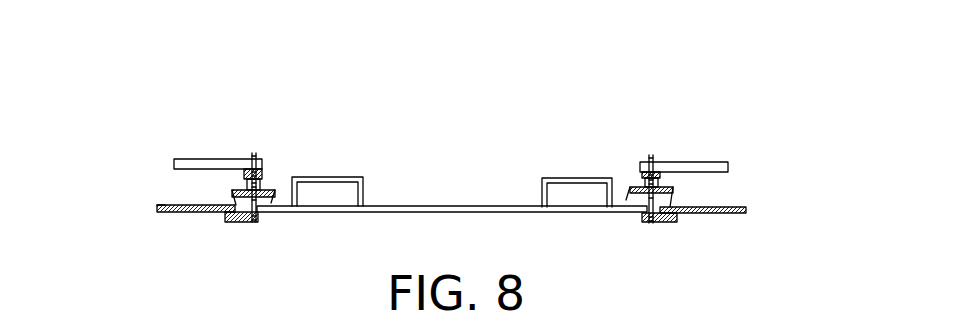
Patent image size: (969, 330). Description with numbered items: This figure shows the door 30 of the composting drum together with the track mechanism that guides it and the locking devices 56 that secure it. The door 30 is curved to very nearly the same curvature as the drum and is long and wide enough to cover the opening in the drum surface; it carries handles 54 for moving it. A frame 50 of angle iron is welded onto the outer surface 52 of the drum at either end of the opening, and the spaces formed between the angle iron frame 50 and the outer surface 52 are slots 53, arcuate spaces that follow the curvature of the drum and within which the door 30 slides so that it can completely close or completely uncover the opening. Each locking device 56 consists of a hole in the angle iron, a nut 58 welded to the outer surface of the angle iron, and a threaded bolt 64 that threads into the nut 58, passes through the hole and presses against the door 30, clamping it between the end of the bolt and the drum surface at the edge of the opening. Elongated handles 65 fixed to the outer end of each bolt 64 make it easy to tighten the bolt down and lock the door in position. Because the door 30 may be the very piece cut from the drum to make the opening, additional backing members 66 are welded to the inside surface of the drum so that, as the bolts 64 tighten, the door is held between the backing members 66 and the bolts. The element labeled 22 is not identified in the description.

The first substrate plate 22 is at (177, 213).
The door 30 is at (450, 206).
The frame 50 is at (243, 191).
The outer surface 52 is at (167, 205).
The slots 53 is at (273, 203).
The handles 54 is at (322, 177).
The locking devices 56 is at (228, 106).
The nut 58 is at (673, 192).
The threaded bolt 64 is at (662, 182).
The elongated handles 65 is at (726, 162).
The backing members 66 is at (235, 222).